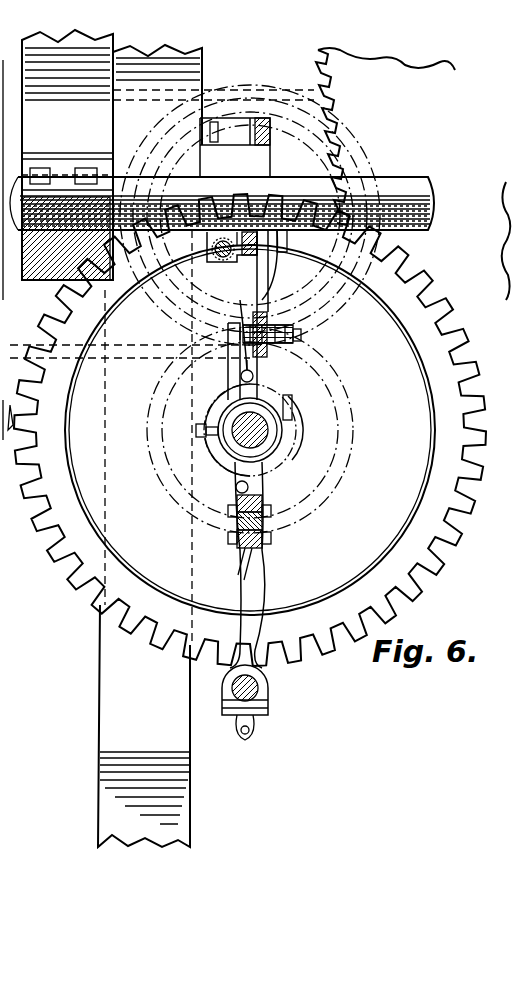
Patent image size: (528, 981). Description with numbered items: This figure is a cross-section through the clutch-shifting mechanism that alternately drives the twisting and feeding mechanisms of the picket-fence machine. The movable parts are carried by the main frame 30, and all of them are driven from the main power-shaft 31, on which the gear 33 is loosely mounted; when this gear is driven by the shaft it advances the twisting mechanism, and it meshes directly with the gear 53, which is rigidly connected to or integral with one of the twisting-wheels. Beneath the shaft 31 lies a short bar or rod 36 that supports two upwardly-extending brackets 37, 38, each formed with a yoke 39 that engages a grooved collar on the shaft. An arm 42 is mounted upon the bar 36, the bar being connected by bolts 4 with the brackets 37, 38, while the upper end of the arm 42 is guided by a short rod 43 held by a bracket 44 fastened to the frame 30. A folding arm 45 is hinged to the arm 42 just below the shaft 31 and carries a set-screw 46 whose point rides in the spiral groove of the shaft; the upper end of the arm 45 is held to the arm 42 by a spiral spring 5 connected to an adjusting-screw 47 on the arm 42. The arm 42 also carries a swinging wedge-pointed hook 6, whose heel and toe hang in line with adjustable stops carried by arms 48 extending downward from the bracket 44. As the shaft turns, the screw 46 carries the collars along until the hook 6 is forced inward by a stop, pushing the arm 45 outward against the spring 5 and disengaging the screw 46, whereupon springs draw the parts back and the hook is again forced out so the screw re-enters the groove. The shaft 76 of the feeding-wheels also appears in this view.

The bolts 4 is at (228, 508).
The spiral spring 5 is at (262, 325).
The swinging wedge-pointed hook 6 is at (254, 376).
The main frame 30 is at (203, 52).
The main power-shaft 31 is at (270, 448).
The gear 33 is at (250, 430).
The short bar or rod 36 is at (270, 682).
The bracket 37 is at (230, 561).
The bracket 38 is at (234, 567).
The yoke 39 is at (292, 400).
The arm 42 is at (270, 300).
The short rod 43 is at (224, 262).
The bracket 44 is at (262, 160).
The folding arm 45 is at (230, 368).
The set-screw 46 is at (196, 418).
The adjusting-screw 47 is at (302, 335).
The arms 48 is at (282, 268).
The gear 53 is at (413, 174).
The shaft 76 is at (222, 203).